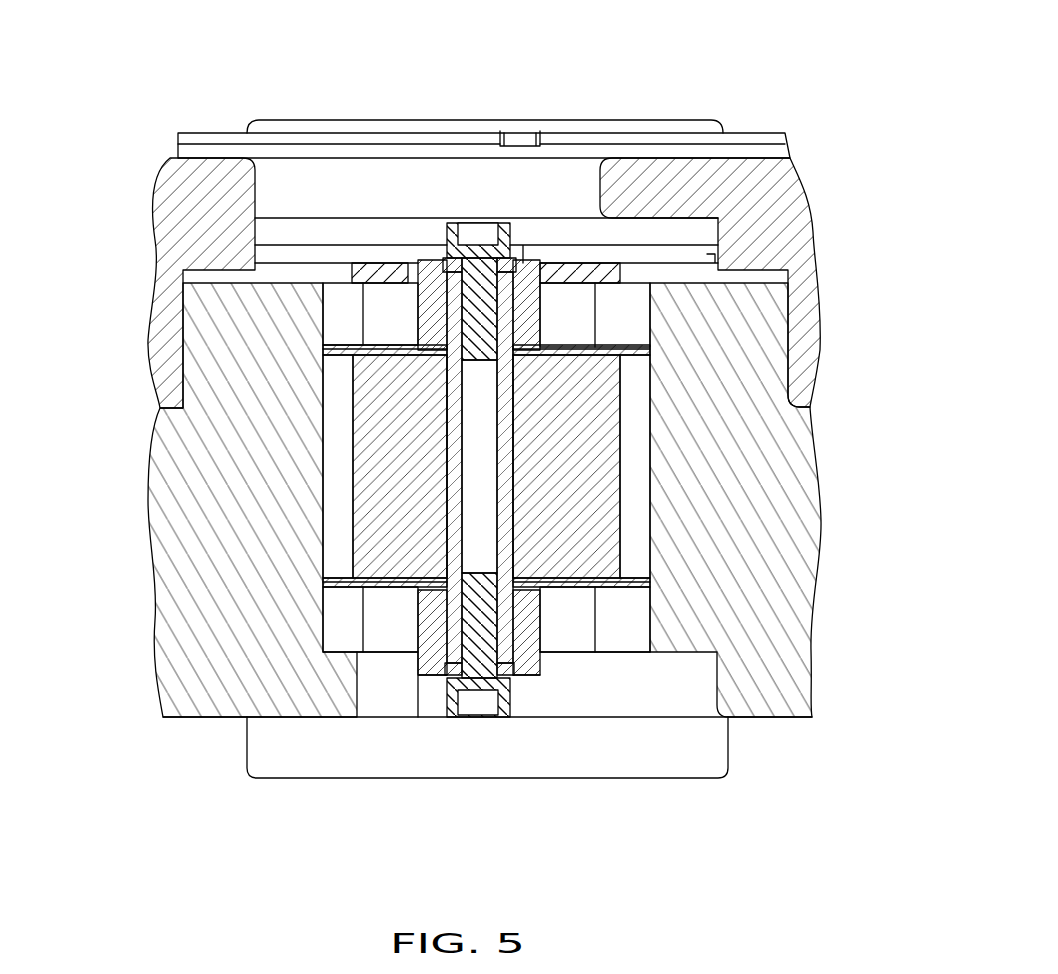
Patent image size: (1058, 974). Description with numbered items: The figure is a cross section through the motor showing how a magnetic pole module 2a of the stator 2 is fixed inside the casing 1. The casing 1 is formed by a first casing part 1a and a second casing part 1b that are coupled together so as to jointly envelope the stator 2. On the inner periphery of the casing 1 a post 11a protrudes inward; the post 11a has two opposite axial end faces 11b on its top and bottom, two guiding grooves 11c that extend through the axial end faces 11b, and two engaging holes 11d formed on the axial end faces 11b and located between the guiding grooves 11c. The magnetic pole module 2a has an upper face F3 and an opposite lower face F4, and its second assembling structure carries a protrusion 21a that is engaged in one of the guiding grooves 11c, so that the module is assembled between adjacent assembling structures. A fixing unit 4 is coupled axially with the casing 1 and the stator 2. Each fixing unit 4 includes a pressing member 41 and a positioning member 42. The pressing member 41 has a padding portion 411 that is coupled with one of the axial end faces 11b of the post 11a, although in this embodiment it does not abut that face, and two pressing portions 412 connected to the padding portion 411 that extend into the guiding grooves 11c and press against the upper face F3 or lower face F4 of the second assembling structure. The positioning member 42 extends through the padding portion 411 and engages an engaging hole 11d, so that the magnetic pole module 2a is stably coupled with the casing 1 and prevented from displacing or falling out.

The casing 1 is at (536, 390).
The first casing part 1a is at (780, 437).
The second casing part 1b is at (793, 212).
The stator 2 is at (252, 500).
The magnetic pole module 2a is at (360, 412).
The fixing unit 4 is at (480, 456).
The pressing member 41 is at (484, 340).
The padding portion 411 is at (400, 290).
The pressing portion 412 is at (440, 265).
The positioning member 42 is at (510, 237).
The post 11a is at (455, 470).
The axial end face 11b is at (333, 290).
The guiding groove 11c is at (480, 466).
The engaging hole 11d is at (425, 632).
The protrusion 21a is at (447, 513).
The upper face F3 is at (462, 335).
The lower face F4 is at (437, 590).